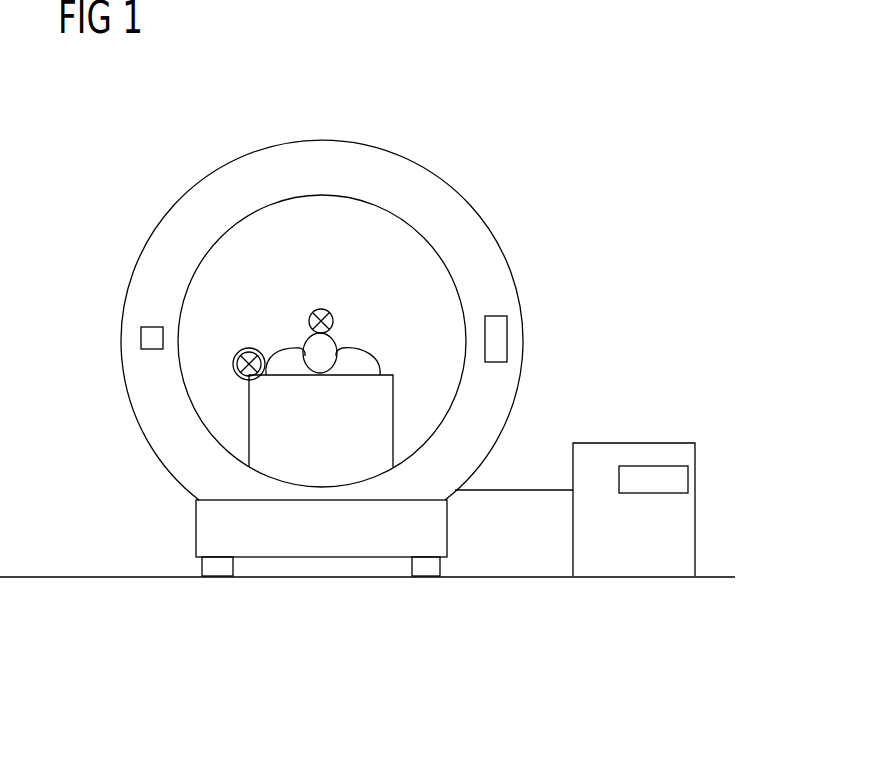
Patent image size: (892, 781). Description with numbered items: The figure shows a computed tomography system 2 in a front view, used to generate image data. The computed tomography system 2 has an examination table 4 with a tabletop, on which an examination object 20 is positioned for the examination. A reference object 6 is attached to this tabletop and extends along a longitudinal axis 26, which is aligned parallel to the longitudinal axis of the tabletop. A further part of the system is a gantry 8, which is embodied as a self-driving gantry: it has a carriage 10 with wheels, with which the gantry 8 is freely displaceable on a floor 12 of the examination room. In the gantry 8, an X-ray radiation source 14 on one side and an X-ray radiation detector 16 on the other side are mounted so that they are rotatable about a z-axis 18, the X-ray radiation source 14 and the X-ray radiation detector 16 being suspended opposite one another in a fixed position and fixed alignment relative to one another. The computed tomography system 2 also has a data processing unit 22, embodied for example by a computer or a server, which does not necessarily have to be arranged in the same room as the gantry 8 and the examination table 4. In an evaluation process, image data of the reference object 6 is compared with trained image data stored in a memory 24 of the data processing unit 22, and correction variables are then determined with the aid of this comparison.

The computed tomography system 2 is at (367, 95).
The examination table 4 is at (249, 418).
The reference object 6 is at (233, 355).
The gantry 8 is at (323, 138).
The carriage 10 is at (196, 532).
The floor 12 is at (514, 579).
The X-ray radiation source 14 is at (141, 340).
The X-ray radiation detector 16 is at (507, 340).
The z-axis 18 is at (320, 308).
The examination object 20 is at (362, 348).
The data processing unit 22 is at (641, 443).
The memory 24 is at (688, 481).
The longitudinal axis 26 is at (233, 367).